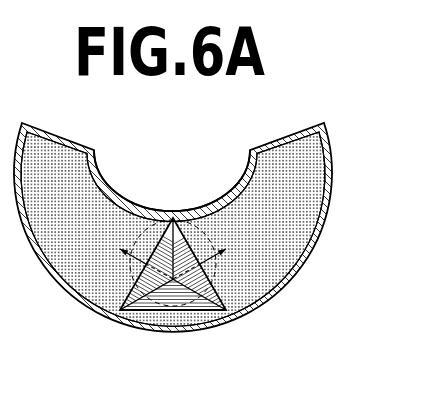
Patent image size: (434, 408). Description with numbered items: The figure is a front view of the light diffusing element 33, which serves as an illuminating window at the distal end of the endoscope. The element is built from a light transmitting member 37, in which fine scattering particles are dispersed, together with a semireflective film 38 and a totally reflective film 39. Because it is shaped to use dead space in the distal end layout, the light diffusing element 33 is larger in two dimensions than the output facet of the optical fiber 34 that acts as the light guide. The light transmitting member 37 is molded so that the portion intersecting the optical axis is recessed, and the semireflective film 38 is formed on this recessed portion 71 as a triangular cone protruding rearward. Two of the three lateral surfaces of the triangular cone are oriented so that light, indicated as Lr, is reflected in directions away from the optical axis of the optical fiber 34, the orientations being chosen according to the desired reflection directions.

The light diffusing element 33 is at (287, 129).
The optical fiber 34 is at (196, 216).
The light transmitting member 37 is at (300, 193).
The semireflective film 38 is at (153, 306).
The totally reflective film 39 is at (329, 148).
The recessed portion 71 is at (184, 315).
The reflected light Lr is at (127, 259).